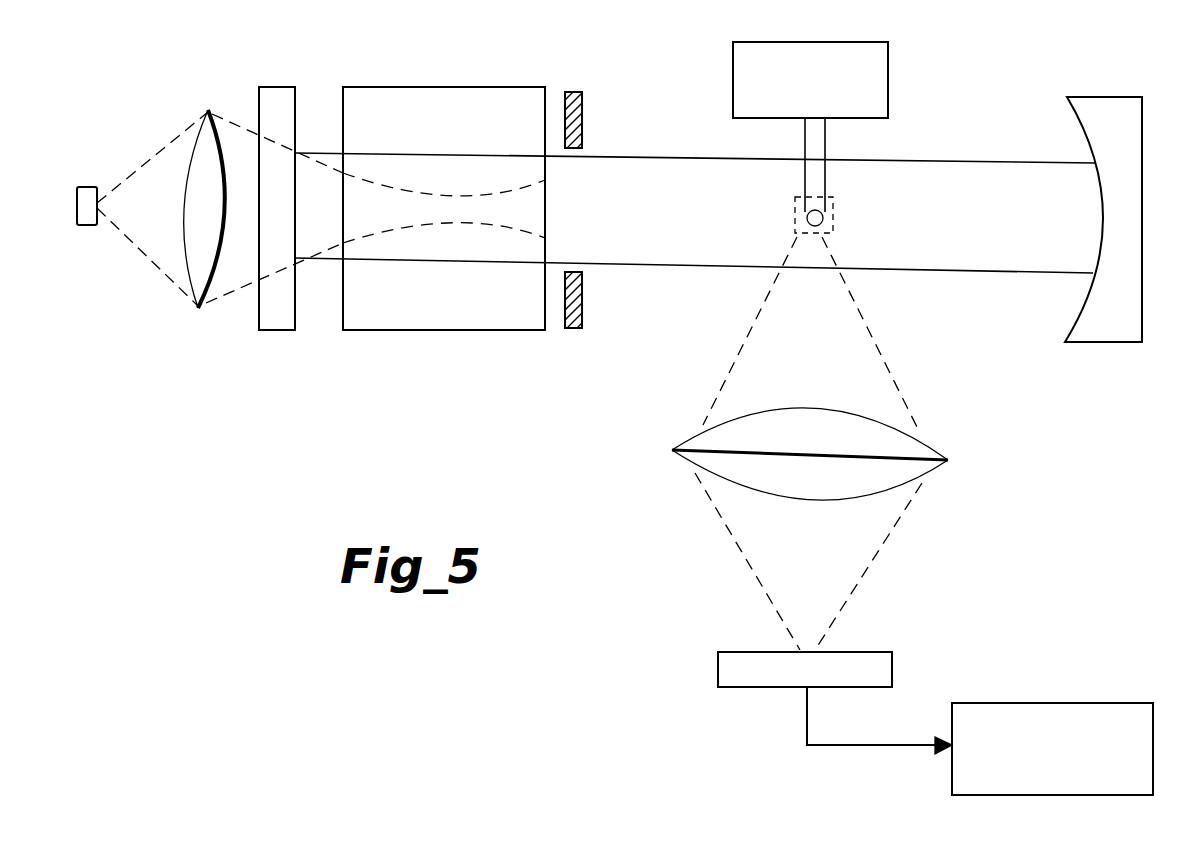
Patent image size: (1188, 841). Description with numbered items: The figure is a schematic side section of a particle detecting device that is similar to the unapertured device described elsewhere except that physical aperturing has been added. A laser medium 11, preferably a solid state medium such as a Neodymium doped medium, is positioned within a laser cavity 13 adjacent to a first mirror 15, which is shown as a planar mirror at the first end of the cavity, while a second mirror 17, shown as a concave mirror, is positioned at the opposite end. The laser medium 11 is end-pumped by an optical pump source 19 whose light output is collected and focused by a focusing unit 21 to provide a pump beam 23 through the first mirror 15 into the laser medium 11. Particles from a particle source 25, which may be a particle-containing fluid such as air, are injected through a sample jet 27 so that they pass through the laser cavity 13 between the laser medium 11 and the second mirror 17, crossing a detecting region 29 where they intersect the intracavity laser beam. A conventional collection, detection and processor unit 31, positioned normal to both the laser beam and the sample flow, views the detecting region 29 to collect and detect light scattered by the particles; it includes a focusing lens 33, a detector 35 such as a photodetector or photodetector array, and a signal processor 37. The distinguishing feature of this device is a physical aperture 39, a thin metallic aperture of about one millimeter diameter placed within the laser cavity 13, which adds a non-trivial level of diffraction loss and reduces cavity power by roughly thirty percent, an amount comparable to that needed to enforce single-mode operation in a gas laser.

The laser medium 11 is at (465, 87).
The laser cavity 13 is at (647, 138).
The first mirror 15 is at (278, 87).
The second mirror 17 is at (1097, 97).
The optical pump source 19 is at (87, 187).
The focusing unit 21 is at (208, 110).
The pump beam 23 is at (233, 287).
The particle source 25 is at (807, 42).
The sample jet 27 is at (821, 214).
The detecting region 29 is at (793, 208).
The collection, detection and processor unit 31 is at (903, 533).
The focusing lens 33 is at (943, 450).
The detector 35 is at (892, 663).
The signal processor 37 is at (1113, 703).
The physical aperture 39 is at (582, 308).